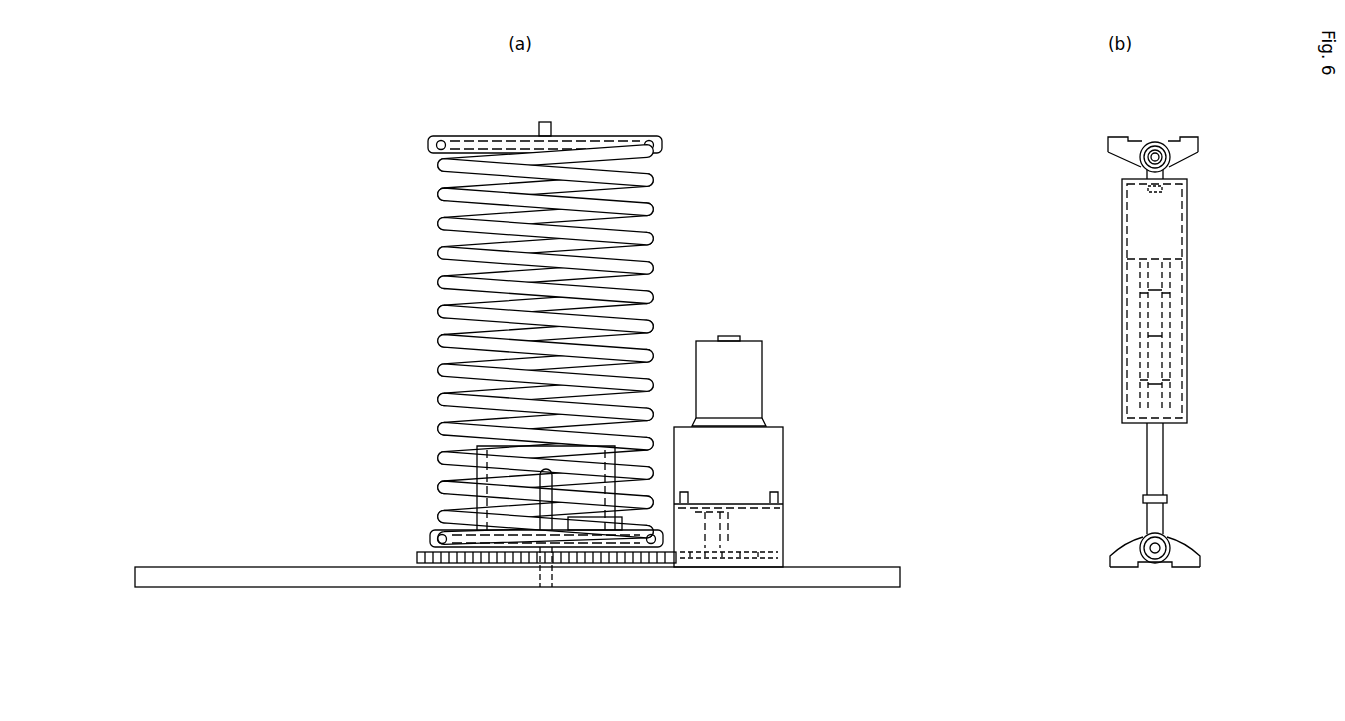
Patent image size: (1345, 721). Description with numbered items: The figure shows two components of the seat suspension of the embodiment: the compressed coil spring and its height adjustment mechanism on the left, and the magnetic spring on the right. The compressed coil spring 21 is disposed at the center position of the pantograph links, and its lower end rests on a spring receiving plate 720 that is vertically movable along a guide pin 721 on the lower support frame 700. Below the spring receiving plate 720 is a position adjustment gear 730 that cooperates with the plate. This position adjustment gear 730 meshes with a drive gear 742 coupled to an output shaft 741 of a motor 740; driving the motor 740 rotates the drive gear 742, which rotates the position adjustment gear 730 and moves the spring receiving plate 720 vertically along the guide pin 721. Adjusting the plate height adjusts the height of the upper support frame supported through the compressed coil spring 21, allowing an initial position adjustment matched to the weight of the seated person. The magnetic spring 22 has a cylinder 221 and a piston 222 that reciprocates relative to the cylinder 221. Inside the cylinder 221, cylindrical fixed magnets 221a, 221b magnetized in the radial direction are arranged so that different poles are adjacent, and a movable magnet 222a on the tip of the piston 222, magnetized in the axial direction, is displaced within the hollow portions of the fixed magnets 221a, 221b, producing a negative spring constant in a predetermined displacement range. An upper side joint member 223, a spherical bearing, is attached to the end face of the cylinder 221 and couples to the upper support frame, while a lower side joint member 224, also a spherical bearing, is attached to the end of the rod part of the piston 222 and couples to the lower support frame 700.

The compressed coil spring 21 is at (667, 203).
The lower support frame 700 is at (845, 578).
The spring receiving plate 720 is at (432, 535).
The guide pin 721 is at (530, 530).
The position adjustment gear 730 is at (415, 556).
The motor 740 is at (757, 340).
The output shaft 741 is at (717, 531).
The drive gear 742 is at (732, 558).
The magnetic spring 22 is at (1152, 354).
The cylinder 221 is at (1122, 247).
The fixed magnet 221a is at (1180, 290).
The fixed magnet 221b is at (1180, 398).
The piston 222 is at (1150, 468).
The movable magnet 222a is at (1150, 335).
The upper side joint member 223 is at (1155, 144).
The lower side joint member 224 is at (1155, 565).